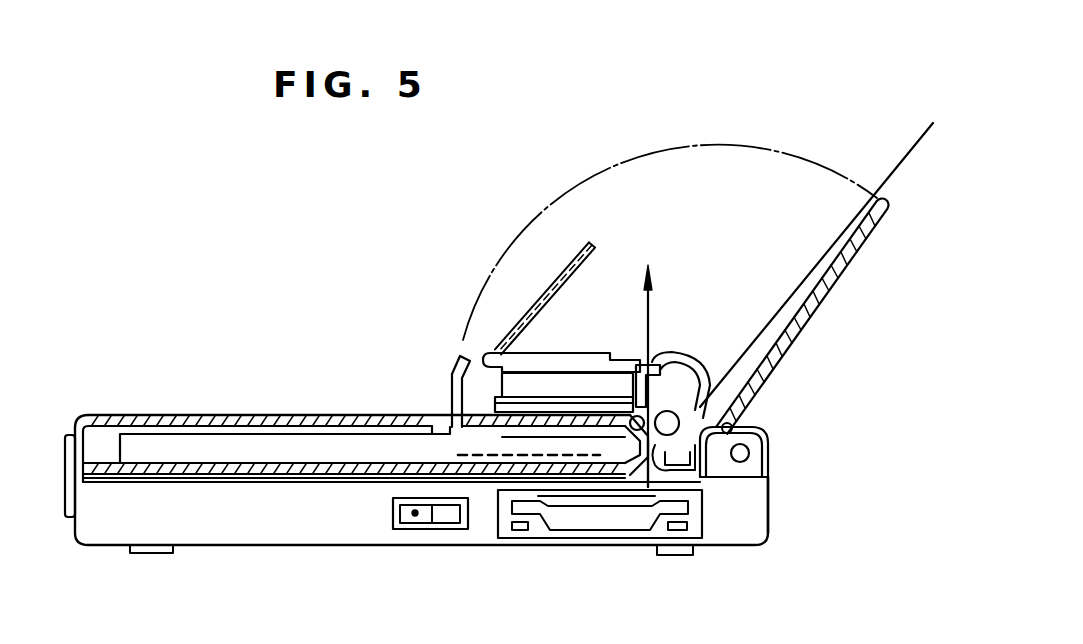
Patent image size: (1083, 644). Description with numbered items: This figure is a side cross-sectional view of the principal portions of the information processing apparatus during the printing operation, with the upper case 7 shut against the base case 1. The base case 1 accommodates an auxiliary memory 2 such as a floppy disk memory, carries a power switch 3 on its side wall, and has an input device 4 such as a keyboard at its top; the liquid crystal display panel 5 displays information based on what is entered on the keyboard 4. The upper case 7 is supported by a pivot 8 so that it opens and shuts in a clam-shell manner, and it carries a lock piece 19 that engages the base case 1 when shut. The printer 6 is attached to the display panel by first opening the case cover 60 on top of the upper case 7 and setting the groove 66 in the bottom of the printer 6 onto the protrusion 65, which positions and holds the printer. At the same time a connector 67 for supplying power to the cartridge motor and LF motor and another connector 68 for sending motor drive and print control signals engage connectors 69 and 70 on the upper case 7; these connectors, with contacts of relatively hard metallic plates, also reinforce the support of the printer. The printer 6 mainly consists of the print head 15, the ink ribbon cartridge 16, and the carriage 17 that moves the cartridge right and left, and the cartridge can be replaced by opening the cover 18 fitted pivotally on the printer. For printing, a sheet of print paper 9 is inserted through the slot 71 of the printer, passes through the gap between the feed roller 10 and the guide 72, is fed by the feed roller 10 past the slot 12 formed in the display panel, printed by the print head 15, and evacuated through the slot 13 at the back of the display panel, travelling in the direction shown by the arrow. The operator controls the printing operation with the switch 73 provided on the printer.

The base case 1 is at (97, 547).
The auxiliary memory 2 is at (587, 522).
The power switch 3 is at (445, 530).
The input device 4 is at (207, 483).
The liquid crystal display panel 5 is at (190, 436).
The printer 6 is at (527, 353).
The upper case 7 is at (112, 415).
The pivot 8 is at (760, 438).
The print paper 9 is at (823, 257).
The feed roller 10 is at (700, 390).
The slot 12 is at (648, 487).
The slot 13 is at (655, 355).
The print head 15 is at (617, 352).
The ink ribbon cartridge 16 is at (548, 296).
The carriage 17 is at (505, 395).
The cover 18 is at (575, 353).
The lock piece 19 is at (65, 440).
The case cover 60 is at (843, 257).
The protrusion 65 is at (683, 462).
The groove 66 is at (767, 497).
The connector 67 is at (503, 432).
The connector 68 is at (354, 423).
The connector 69 is at (503, 433).
The connector 70 is at (527, 518).
The slot 71 is at (758, 373).
The guide 72 is at (678, 460).
The switch 73 is at (452, 360).